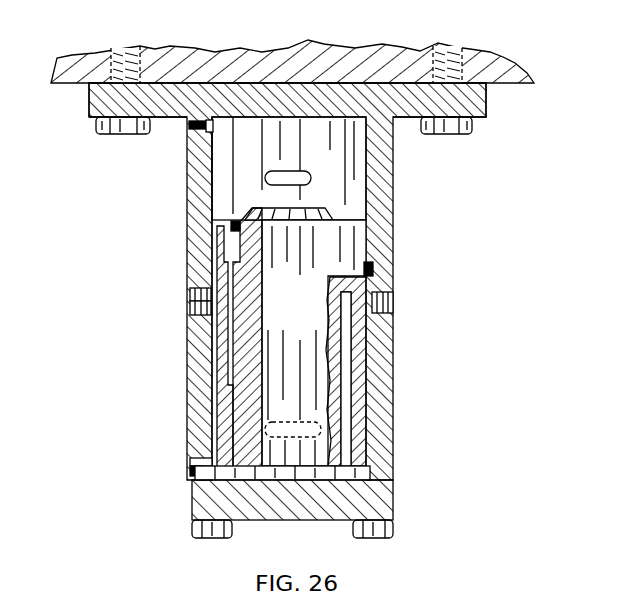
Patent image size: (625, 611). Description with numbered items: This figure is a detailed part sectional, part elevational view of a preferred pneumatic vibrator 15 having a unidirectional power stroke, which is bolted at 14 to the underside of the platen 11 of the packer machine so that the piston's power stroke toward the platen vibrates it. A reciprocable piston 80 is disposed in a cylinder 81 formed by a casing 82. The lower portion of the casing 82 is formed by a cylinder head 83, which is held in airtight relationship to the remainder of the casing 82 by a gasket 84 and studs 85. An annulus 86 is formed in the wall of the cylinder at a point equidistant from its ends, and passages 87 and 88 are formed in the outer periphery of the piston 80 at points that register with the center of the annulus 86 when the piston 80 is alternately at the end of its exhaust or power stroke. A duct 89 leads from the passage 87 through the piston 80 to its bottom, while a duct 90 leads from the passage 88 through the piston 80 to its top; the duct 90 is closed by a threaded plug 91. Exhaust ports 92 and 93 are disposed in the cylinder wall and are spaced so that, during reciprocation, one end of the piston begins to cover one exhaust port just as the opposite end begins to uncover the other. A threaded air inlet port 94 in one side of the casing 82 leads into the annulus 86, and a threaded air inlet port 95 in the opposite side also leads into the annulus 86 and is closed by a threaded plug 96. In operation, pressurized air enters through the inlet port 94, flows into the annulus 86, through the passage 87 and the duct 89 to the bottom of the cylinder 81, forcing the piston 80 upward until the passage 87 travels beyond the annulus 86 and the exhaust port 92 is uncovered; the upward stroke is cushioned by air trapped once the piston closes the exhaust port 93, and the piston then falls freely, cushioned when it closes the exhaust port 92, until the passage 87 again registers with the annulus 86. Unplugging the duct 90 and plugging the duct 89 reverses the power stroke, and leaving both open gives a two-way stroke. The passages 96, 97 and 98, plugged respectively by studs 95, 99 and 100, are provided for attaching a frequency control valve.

The platen 11 is at (404, 63).
The bolted attachment point 14 is at (488, 86).
The pneumatic vibrator 15 is at (188, 258).
The piston 80 is at (305, 309).
The cylinder 81 is at (326, 153).
The casing 82 is at (394, 172).
The cylinder head 83 is at (394, 505).
The gasket 84 is at (371, 476).
The studs 85 is at (394, 528).
The annulus 86 is at (370, 268).
The passage 87 is at (352, 297).
The passage 88 is at (231, 392).
The duct 89 is at (346, 362).
The duct 90 is at (236, 250).
The threaded plug 91 is at (232, 222).
The exhaust port 92 is at (293, 429).
The exhaust port 93 is at (288, 178).
The threaded air inlet port 94 is at (394, 303).
The threaded air inlet port 95 is at (192, 304).
The threaded plug 96 is at (197, 292).
The passage 97 is at (195, 462).
The passage 98 is at (209, 131).
The stud 99 is at (191, 471).
The stud 100 is at (196, 128).